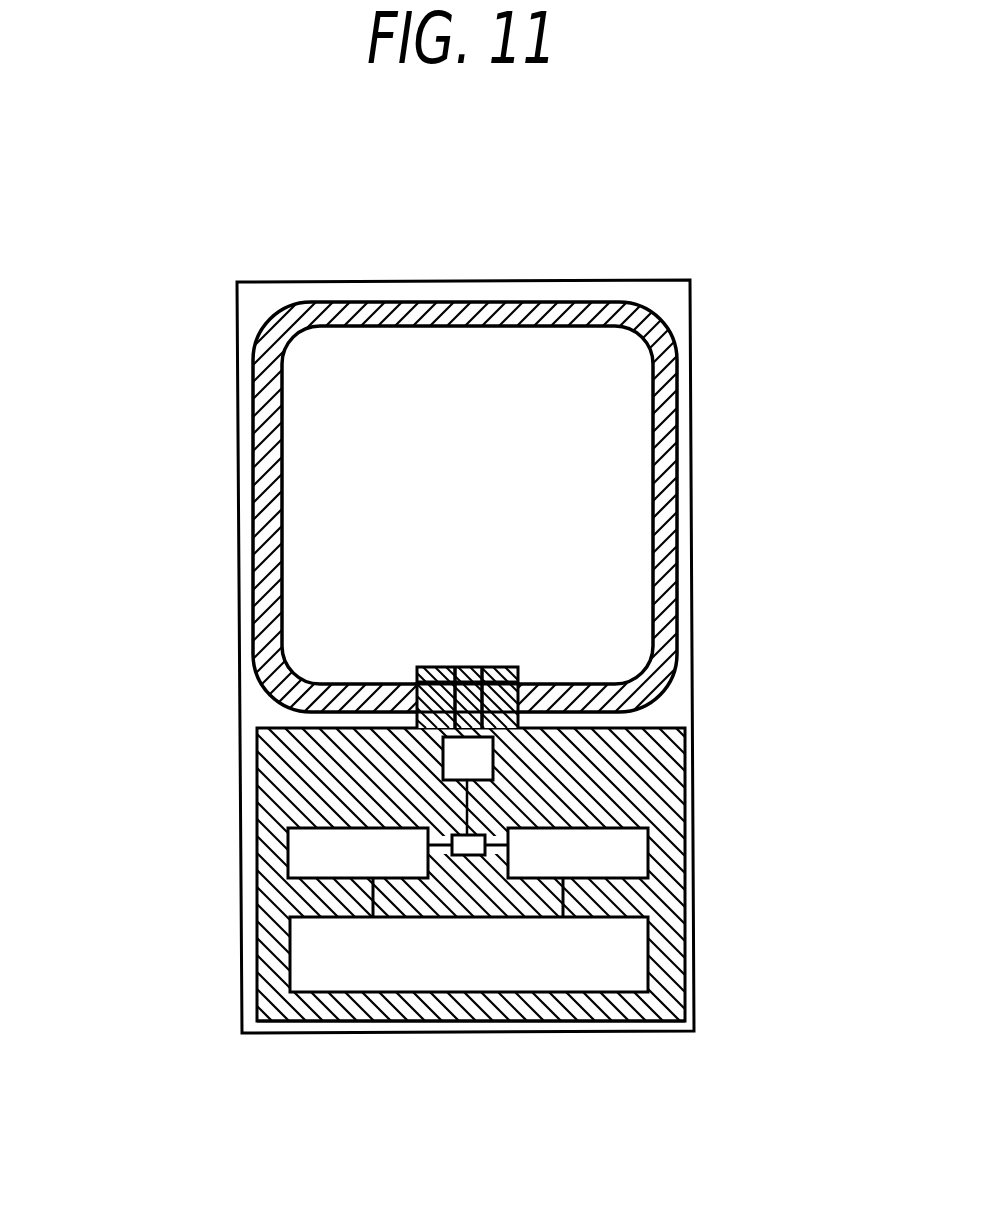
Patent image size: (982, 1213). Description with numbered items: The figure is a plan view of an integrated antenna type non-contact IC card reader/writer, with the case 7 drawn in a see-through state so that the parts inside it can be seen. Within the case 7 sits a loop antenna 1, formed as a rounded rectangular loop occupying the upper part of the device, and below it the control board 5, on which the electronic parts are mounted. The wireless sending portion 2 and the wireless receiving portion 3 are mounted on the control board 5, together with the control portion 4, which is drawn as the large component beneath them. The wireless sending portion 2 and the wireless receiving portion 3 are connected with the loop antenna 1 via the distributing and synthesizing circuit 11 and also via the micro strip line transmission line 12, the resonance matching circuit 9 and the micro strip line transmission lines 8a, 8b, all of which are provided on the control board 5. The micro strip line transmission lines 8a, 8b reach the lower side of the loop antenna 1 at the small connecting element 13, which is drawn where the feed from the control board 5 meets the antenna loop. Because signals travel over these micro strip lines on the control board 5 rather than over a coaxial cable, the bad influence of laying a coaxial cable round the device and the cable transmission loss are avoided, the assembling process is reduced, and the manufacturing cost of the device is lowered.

The loop antenna 1 is at (483, 310).
The wireless sending portion 2 is at (327, 845).
The wireless receiving portion 3 is at (597, 845).
The control portion 4 is at (350, 947).
The control board 5 is at (385, 1017).
The case 7 is at (252, 302).
The micro strip line transmission line 8a is at (523, 684).
The micro strip line transmission line 8b is at (418, 668).
The resonance matching circuit 9 is at (460, 772).
The distributing and synthesizing circuit 11 is at (447, 838).
The micro strip line transmission line 12 is at (483, 833).
The conductive connecting member 13 is at (457, 667).